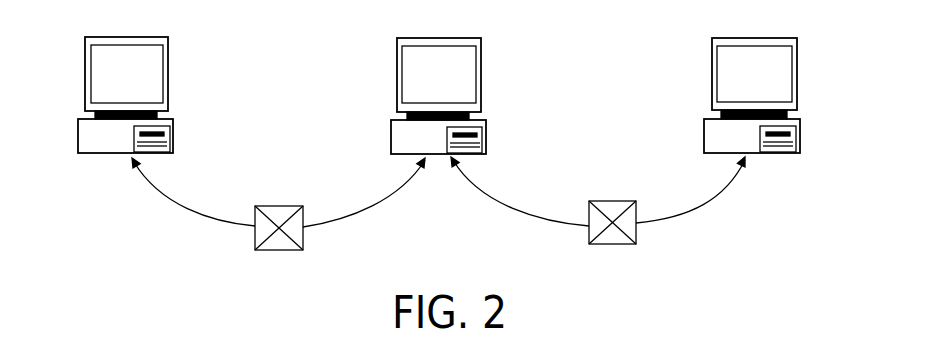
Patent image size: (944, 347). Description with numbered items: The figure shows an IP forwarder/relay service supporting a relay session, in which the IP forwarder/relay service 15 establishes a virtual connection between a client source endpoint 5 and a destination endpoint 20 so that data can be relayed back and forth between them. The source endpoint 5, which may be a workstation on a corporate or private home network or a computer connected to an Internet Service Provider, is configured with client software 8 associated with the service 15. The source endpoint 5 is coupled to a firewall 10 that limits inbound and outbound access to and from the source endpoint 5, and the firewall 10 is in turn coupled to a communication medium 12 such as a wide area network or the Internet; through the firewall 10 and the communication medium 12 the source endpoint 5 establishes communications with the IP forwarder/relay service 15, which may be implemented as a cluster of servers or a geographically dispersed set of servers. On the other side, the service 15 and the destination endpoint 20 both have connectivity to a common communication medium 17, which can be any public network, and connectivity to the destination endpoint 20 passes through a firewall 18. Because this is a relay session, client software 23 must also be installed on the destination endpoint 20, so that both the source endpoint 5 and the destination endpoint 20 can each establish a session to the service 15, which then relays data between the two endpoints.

The client source endpoint 5 is at (115, 107).
The client software 8 is at (93, 132).
The firewall 10 is at (279, 241).
The communication medium 12 is at (364, 192).
The IP forwarder/relay service 15 is at (452, 96).
The communication medium 17 is at (520, 191).
The firewall 18 is at (612, 236).
The destination endpoint 20 is at (770, 109).
The client software 23 is at (800, 145).